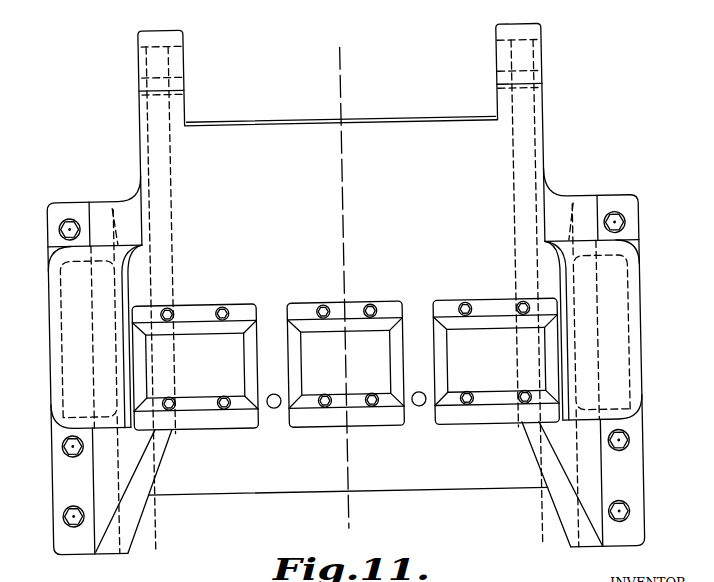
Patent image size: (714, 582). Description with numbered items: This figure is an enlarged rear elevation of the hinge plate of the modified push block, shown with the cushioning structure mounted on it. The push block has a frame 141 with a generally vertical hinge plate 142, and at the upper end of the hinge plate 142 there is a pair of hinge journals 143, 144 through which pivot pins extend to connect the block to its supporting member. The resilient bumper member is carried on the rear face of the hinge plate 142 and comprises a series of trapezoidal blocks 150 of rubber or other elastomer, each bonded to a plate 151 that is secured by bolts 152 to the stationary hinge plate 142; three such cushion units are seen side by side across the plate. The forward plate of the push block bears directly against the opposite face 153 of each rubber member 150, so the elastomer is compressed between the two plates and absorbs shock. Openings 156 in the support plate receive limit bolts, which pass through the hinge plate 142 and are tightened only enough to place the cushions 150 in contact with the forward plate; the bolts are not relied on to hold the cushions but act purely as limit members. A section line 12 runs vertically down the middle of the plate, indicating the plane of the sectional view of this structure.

The section line 12- 12 is at (348, 289).
The frame 141 is at (379, 116).
The hinge plate 142 is at (411, 197).
The hinge journal 143 is at (182, 47).
The hinge journal 144 is at (501, 55).
The trapezoidal block 150 is at (228, 341).
The plate 151 is at (194, 305).
The bolt 152 is at (171, 305).
The opposite face 153 is at (211, 371).
The opening 156 is at (271, 406).